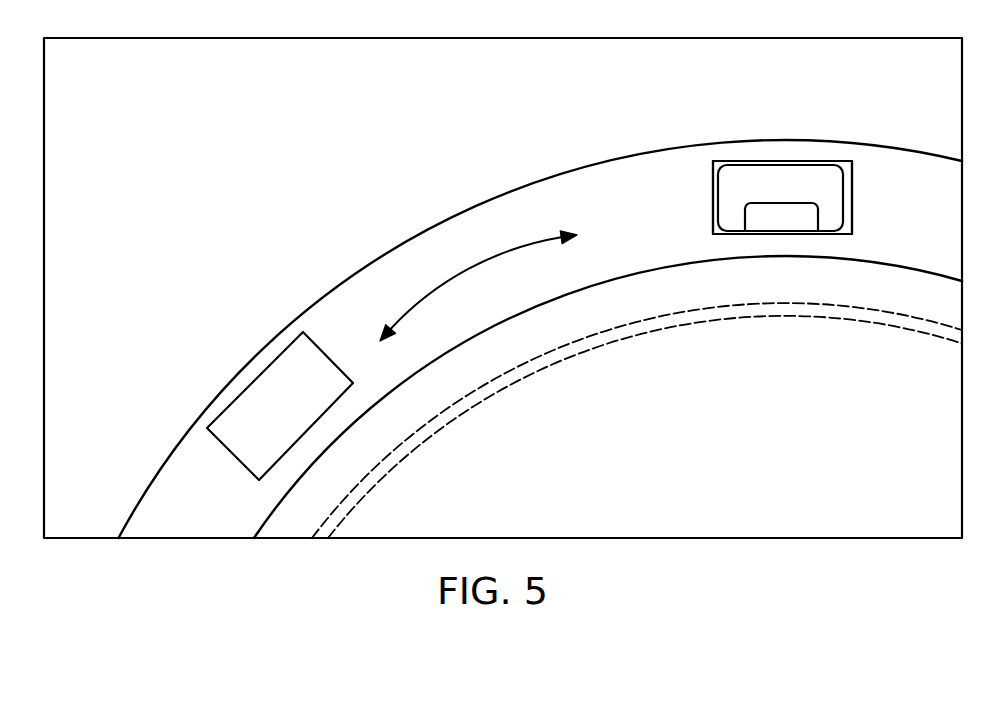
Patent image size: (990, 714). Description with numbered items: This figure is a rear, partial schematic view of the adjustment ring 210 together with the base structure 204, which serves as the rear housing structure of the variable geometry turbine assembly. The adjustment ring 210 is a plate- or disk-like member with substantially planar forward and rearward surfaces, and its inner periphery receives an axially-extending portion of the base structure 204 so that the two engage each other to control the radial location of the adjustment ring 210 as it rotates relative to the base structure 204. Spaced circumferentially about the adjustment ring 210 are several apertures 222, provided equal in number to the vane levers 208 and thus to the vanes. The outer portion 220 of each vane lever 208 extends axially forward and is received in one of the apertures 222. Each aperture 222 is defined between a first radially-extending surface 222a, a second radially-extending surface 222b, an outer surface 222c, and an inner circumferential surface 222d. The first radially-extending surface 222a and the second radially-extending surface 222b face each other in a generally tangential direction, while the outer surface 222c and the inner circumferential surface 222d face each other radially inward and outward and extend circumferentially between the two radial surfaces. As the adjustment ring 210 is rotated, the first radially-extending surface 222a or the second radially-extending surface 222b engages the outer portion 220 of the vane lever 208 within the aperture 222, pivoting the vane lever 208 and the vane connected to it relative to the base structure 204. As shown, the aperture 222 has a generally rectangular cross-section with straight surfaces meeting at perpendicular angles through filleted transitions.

The base structure 204 is at (600, 283).
The vane lever 208 is at (848, 162).
The adjustment ring 210 is at (476, 205).
The outer portion of vane lever 220 is at (842, 158).
The aperture 222 is at (243, 331).
The first radially-extending surface 222a is at (713, 193).
The second radially-extending surface 222b is at (852, 194).
The outer surface 222c is at (816, 163).
The inner circumferential surface 222d is at (780, 234).